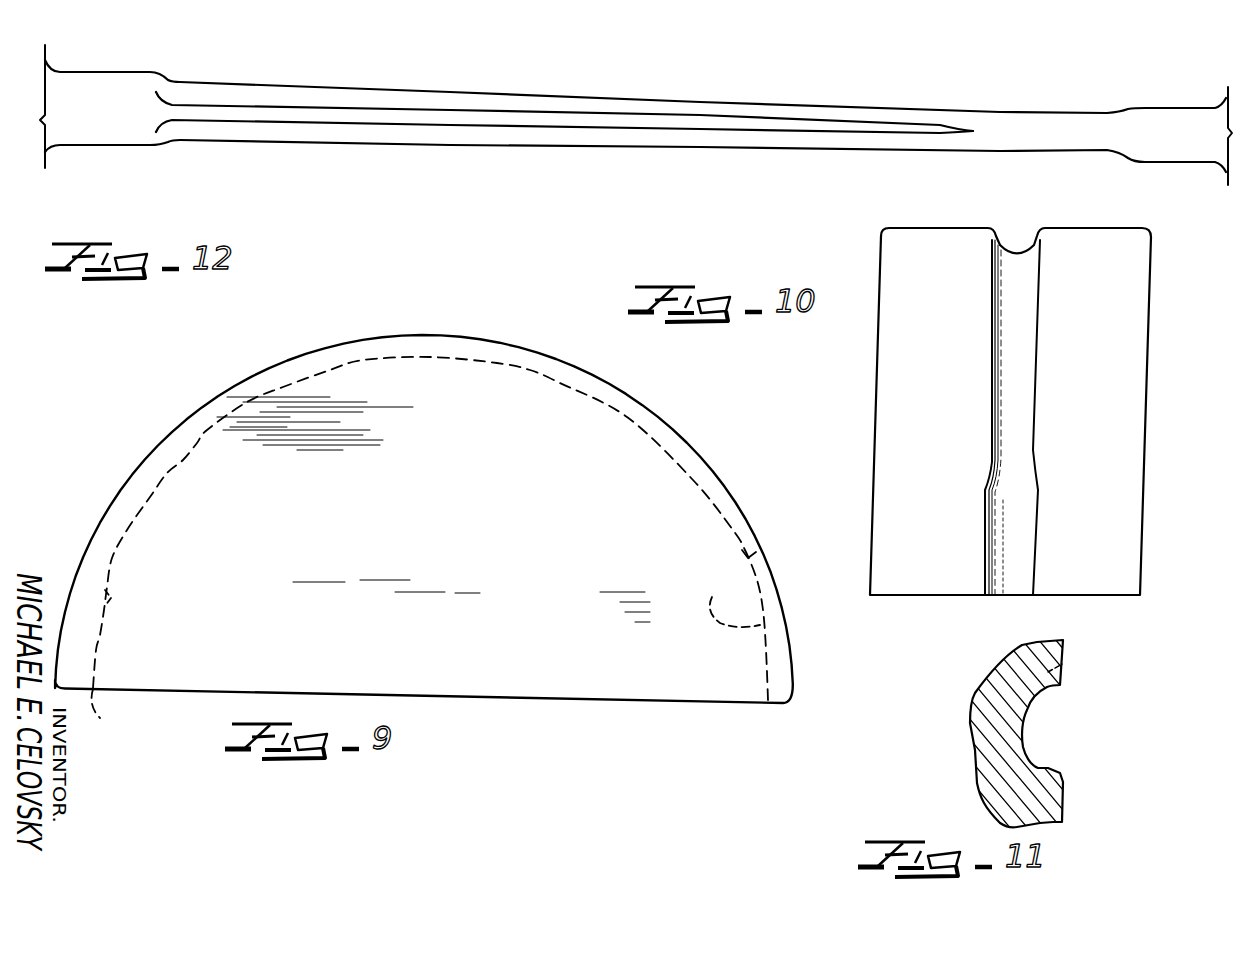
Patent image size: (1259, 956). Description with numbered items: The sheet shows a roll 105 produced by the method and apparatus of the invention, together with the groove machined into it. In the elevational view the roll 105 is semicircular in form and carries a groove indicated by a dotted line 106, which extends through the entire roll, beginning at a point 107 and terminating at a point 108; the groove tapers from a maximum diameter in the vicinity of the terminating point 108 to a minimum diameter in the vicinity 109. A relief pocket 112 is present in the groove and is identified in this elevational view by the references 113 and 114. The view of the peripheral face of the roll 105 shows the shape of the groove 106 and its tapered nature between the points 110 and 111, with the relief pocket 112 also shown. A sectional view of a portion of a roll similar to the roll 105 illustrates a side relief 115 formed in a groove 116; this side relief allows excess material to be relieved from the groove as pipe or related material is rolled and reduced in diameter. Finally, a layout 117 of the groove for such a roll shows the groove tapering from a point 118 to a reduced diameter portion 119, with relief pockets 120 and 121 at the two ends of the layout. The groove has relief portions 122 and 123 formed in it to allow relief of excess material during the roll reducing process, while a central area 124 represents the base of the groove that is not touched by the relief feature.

In FIG. 10, the roll 105 is at (1152, 358).
In FIG. 9, the roll 105 is at (466, 336).
In FIG. 10, the groove 106 is at (1038, 311).
In FIG. 9, the groove 106 is at (190, 464).
In FIG. 9, the groove beginning point 107 is at (123, 711).
In FIG. 9, the groove terminating point 108 is at (105, 557).
In FIG. 9, the minimum diameter vicinity 109 is at (750, 548).
In FIG. 10, the groove taper start point 110 is at (993, 256).
In FIG. 10, the groove taper end point 111 is at (993, 462).
In FIG. 10, the relief pocket 112 is at (1020, 548).
In FIG. 9, the relief pocket 112 is at (100, 636).
In FIG. 9, the relief pocket identifier 113 is at (726, 599).
In FIG. 9, the relief pocket identifier 114 is at (108, 604).
In FIG. 11, the side relief 115 is at (1078, 661).
In FIG. 11, the groove 116 is at (1022, 728).
In FIG. 12, the layout 117 is at (345, 82).
In FIG. 12, the taper start point 118 is at (180, 81).
In FIG. 12, the reduced diameter portion 119 is at (1063, 113).
In FIG. 12, the relief pocket 120 is at (120, 56).
In FIG. 12, the relief pocket 121 is at (1169, 107).
In FIG. 12, the relief portion 122 is at (520, 103).
In FIG. 12, the relief portion 123 is at (563, 134).
In FIG. 12, the central area 124 is at (590, 116).